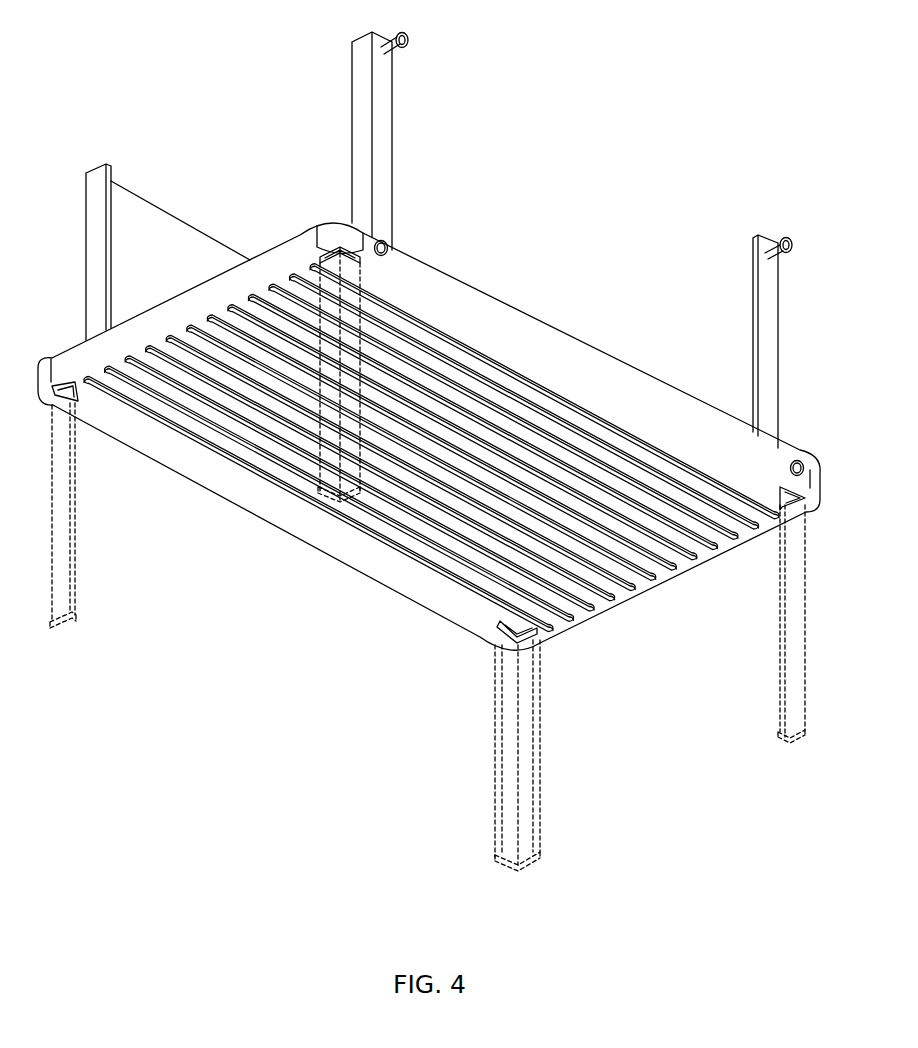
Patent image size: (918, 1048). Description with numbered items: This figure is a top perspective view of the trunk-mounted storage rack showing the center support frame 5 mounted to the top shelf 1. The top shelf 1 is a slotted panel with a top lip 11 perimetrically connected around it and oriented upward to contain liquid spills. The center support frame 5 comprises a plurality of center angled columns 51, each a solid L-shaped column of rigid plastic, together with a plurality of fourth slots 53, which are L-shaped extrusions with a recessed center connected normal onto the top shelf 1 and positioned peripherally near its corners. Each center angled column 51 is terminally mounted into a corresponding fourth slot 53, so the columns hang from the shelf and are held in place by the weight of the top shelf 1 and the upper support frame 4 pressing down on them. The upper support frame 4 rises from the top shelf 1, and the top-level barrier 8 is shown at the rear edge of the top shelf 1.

The top shelf 1 is at (429, 436).
The top lip 11 is at (547, 325).
The upper support frame 4 is at (362, 99).
The top-level barrier 8 is at (173, 214).
The center support frame 5 is at (556, 750).
The center angled columns 51 is at (513, 872).
The fourth slots 53 is at (76, 396).